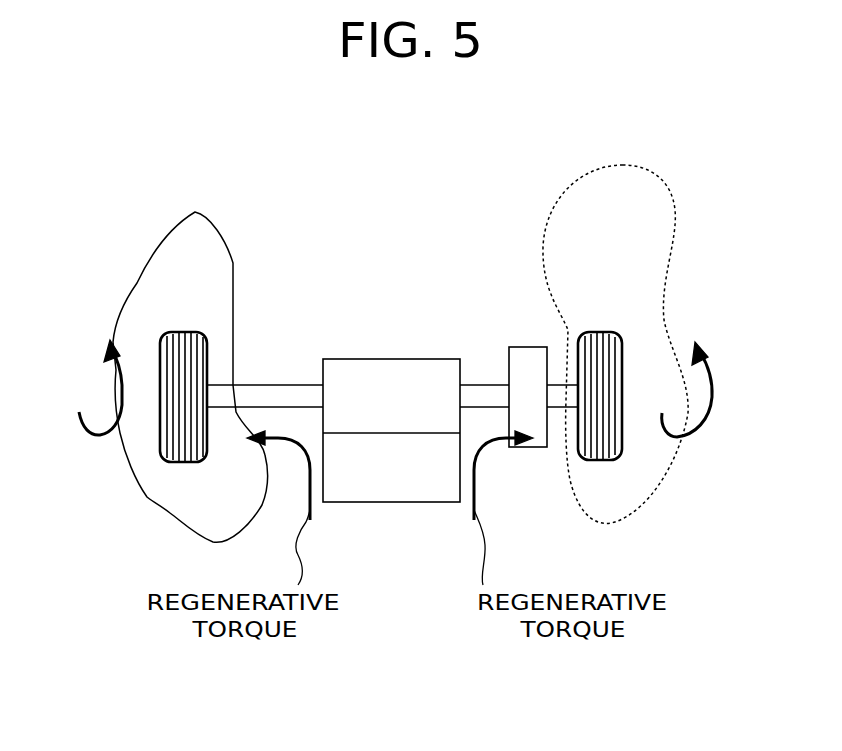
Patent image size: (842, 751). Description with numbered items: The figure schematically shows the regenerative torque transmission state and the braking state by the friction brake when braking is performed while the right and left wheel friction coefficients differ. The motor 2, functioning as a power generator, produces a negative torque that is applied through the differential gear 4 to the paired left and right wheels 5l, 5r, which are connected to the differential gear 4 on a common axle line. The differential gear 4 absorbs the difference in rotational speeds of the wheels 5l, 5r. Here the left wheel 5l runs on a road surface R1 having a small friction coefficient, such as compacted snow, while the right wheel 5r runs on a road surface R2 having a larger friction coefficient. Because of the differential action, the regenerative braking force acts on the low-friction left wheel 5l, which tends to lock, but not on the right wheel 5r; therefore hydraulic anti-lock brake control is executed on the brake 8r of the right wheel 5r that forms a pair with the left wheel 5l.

The road surface R1 is at (148, 271).
The road surface R2 is at (642, 492).
The left wheel 5l is at (177, 462).
The right wheel 5r is at (613, 332).
The differential gear 4 is at (391, 449).
The motor 2 is at (400, 502).
The brake 8r is at (523, 347).